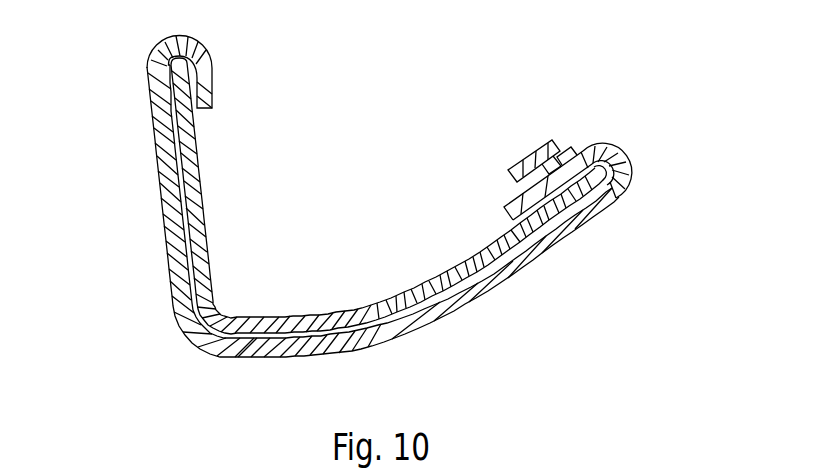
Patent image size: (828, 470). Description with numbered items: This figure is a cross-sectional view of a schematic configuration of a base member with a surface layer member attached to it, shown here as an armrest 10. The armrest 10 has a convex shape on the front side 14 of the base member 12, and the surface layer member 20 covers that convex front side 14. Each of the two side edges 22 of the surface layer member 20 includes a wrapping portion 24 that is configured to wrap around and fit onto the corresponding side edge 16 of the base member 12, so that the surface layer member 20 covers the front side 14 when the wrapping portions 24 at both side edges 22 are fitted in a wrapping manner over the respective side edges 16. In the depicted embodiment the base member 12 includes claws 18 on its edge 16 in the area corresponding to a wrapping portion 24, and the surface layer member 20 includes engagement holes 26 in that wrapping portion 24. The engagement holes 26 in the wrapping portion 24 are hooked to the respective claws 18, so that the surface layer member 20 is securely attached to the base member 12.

The armrest 10 is at (378, 83).
The base member 12 is at (300, 324).
The front side 14 is at (182, 208).
The edge 16 is at (167, 90).
The claw 18 is at (523, 170).
The surface layer member 20 is at (297, 353).
The edge 22 is at (157, 62).
The wrapping portion 24 is at (203, 82).
The engagement hole 26 is at (558, 158).